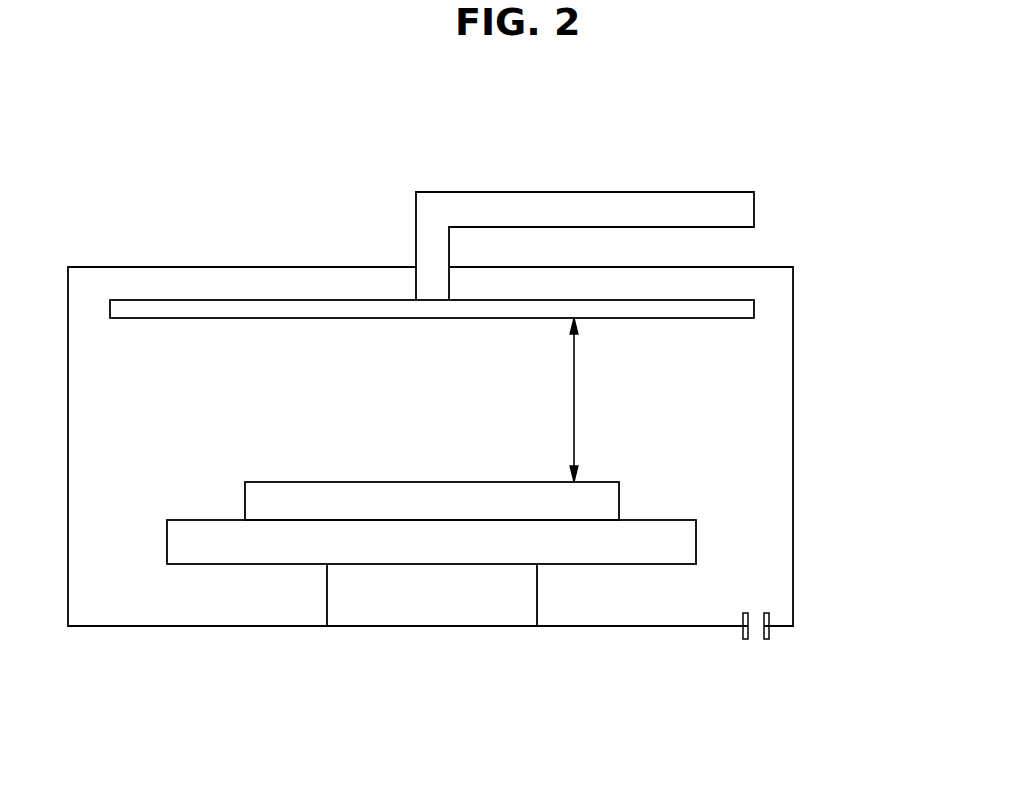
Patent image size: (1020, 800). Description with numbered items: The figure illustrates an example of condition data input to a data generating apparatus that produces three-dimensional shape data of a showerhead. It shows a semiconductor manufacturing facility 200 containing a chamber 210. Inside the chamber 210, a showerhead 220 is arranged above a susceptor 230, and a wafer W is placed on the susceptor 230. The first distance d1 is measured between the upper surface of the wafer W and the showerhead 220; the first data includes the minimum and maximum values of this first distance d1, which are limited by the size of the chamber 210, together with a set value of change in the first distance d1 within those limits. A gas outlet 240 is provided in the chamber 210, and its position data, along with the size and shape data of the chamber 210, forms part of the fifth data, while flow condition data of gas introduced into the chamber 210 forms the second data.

The semiconductor manufacturing facility 200 is at (450, 115).
The chamber 210 is at (793, 267).
The showerhead 220 is at (754, 308).
The susceptor 230 is at (696, 520).
The gas outlet 240 is at (743, 632).
The wafer W is at (619, 482).
The first distance d1 is at (590, 400).